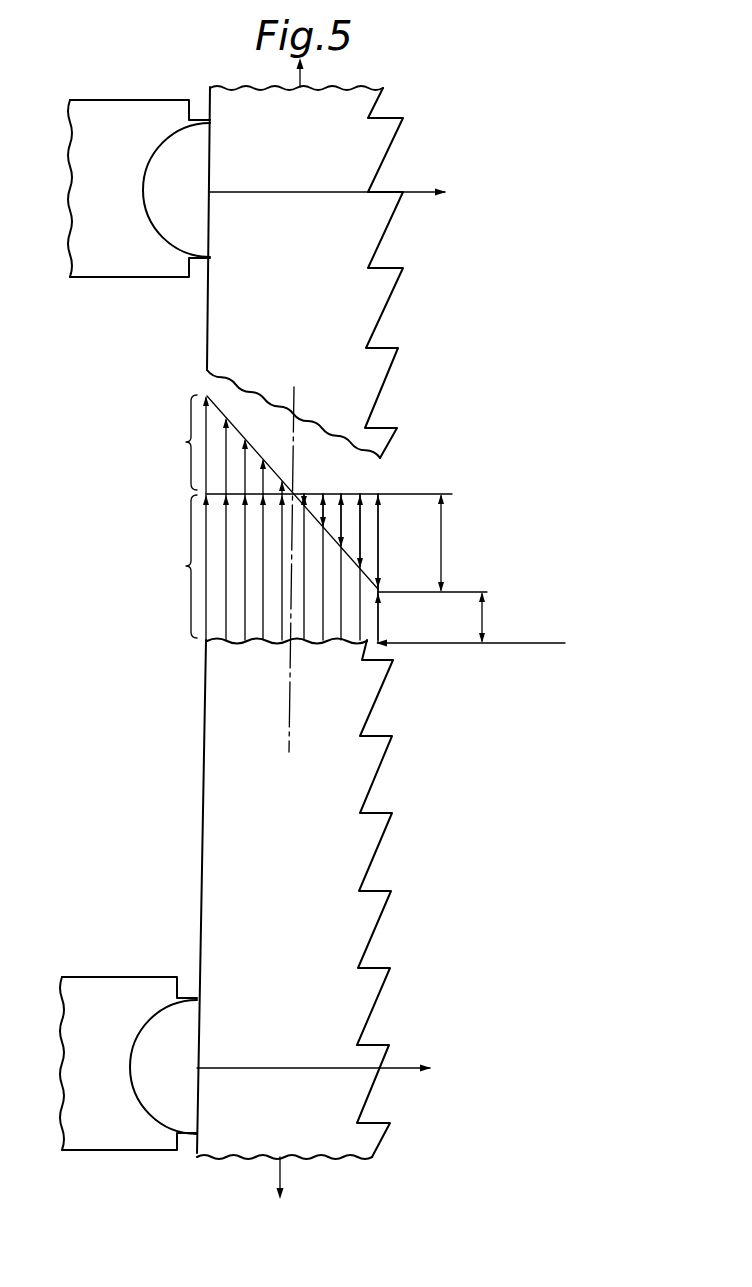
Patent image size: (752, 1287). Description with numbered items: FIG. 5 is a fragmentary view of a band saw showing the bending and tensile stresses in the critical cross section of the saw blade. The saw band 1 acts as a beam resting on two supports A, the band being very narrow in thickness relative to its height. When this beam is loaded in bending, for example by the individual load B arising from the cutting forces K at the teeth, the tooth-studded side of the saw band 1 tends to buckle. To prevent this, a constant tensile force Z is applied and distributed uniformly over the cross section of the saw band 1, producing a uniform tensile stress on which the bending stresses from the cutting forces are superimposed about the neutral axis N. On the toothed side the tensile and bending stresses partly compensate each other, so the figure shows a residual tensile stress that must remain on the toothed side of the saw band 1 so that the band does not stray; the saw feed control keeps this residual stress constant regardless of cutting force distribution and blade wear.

The saw band 1 is at (200, 826).
The supports A is at (117, 268).
The individual load B is at (430, 645).
The cutting force K is at (413, 190).
The tensile force Z is at (303, 81).
The neutral axis N is at (290, 724).